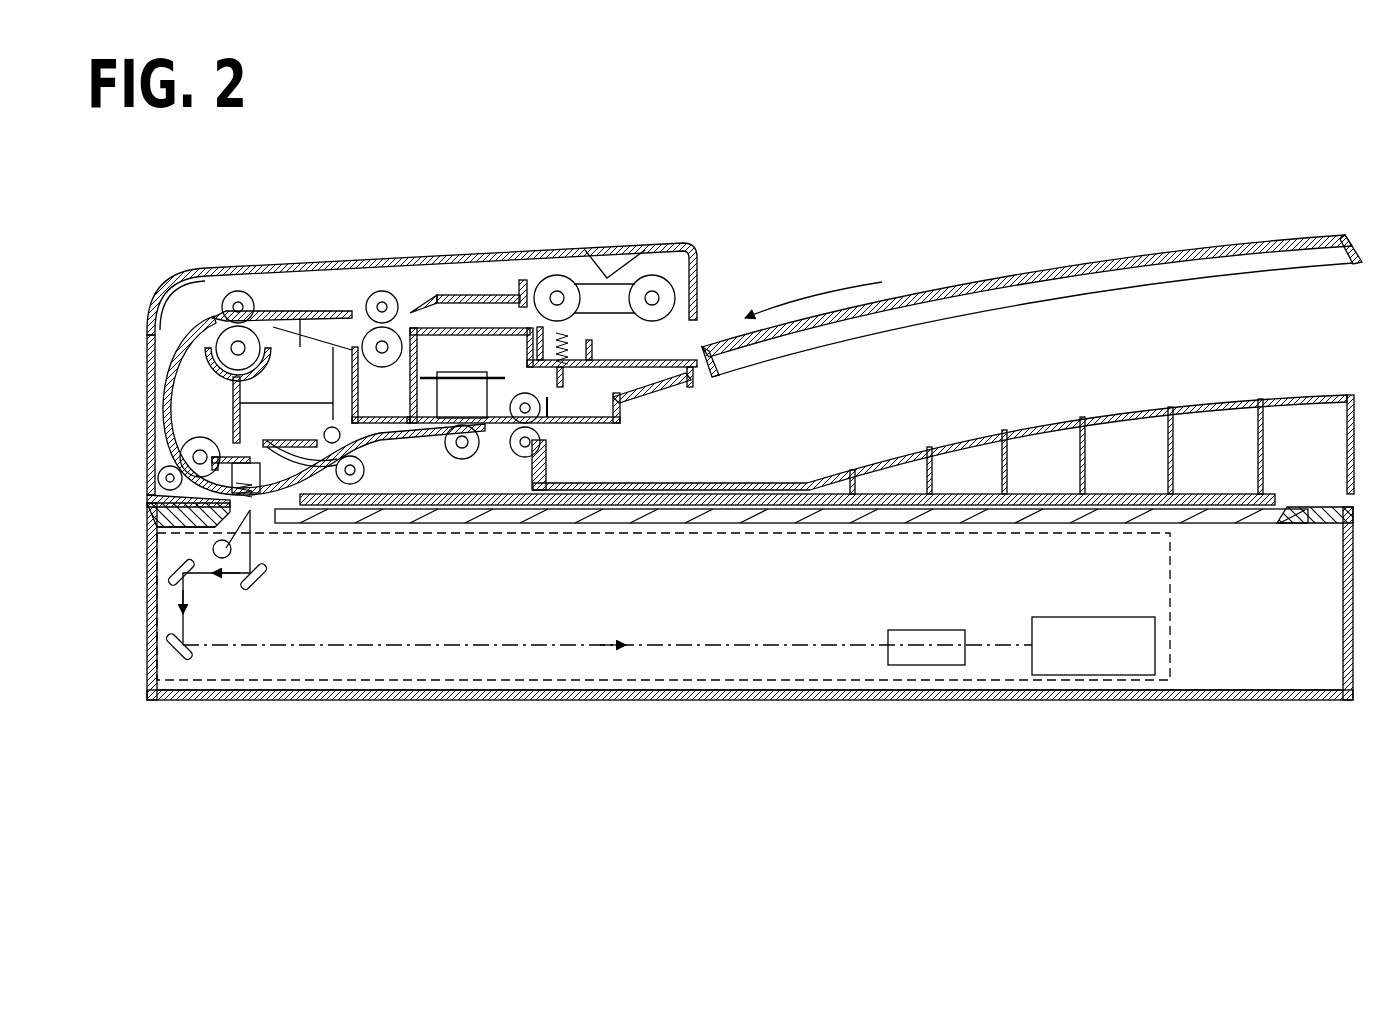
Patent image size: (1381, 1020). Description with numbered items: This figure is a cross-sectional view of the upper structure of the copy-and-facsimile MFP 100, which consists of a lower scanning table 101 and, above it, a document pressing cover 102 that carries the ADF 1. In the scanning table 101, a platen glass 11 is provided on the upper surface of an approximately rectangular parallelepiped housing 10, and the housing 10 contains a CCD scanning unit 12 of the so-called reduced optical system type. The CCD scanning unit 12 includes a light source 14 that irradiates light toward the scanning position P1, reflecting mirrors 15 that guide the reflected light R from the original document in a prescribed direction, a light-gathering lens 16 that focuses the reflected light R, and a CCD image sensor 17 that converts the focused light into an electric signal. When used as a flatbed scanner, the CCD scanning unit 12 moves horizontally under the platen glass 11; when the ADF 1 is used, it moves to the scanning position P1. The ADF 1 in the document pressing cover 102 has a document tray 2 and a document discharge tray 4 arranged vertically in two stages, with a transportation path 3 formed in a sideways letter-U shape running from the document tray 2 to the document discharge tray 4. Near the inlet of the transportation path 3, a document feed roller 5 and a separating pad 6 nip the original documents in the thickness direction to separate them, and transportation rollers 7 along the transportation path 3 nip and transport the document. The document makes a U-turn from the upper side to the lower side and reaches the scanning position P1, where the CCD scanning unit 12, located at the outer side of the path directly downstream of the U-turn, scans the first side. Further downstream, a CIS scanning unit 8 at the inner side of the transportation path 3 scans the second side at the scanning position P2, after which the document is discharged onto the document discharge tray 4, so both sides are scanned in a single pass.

The ADF 1 is at (722, 300).
The document tray 2 is at (935, 290).
The transportation path 3 is at (458, 315).
The document discharge tray 4 is at (787, 483).
The document feed roller 5 is at (553, 275).
The separating pad 6 is at (570, 320).
The transportation rollers 7 is at (310, 312).
The CIS scanning unit 8 is at (460, 372).
The housing 10 is at (648, 702).
The platen glass 11 is at (1276, 524).
The CCD scanning unit 12 is at (1170, 604).
The light source 14 is at (213, 549).
The reflecting mirrors 15 is at (262, 583).
The light-gathering lens 16 is at (920, 630).
The CCD image sensor 17 is at (1086, 617).
The copy-and-facsimile MFP 100 is at (270, 772).
The scanning table 101 is at (537, 723).
The document pressing cover 102 is at (323, 212).
The scanning position P1 is at (272, 540).
The scanning position P2 is at (428, 447).
The reflected light R is at (545, 645).